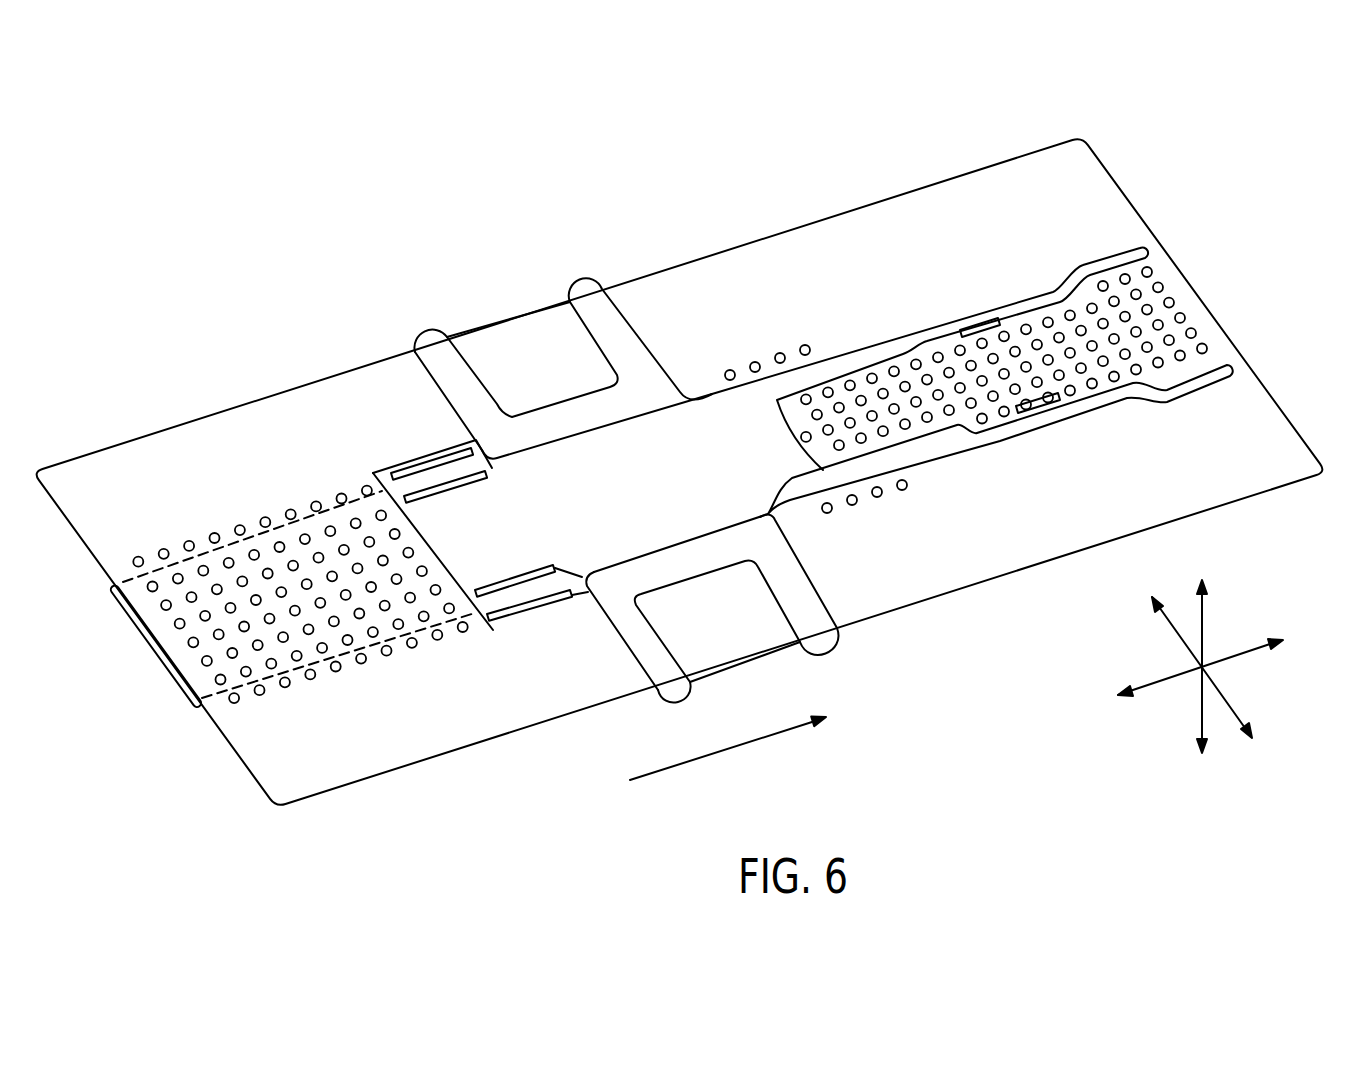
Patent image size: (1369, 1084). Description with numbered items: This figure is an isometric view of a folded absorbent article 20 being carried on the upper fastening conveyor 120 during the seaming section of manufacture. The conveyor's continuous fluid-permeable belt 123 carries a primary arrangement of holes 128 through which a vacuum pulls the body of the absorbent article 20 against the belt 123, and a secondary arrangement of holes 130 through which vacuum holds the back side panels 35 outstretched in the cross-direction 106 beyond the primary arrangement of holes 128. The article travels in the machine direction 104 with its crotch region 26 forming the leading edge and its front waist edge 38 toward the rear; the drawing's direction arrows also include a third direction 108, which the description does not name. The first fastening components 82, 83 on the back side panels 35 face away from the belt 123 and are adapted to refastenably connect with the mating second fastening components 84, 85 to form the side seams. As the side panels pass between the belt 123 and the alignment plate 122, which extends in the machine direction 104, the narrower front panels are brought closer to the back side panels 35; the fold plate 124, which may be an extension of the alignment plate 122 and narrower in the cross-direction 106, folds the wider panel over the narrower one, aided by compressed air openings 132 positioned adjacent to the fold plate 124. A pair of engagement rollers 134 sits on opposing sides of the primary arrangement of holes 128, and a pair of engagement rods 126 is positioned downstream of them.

The upper fastening conveyor 120 is at (110, 347).
The alignment plate 122 is at (432, 347).
The absorbent article 20 is at (637, 483).
The belt 123 is at (1248, 417).
The fold plate 124 is at (937, 445).
The engagement rods 126 is at (1125, 247).
The primary arrangement of holes 128 is at (138, 645).
The secondary arrangement of holes 130 is at (267, 523).
The compressed air openings 132 is at (755, 365).
The engagement rollers 134 is at (980, 322).
The crotch region 26 is at (781, 443).
The back side panels 35 is at (458, 557).
The front waist edge 38 is at (417, 527).
The first fastening component 82 is at (506, 612).
The first fastening component 83 is at (393, 477).
The second fastening component 84 is at (500, 577).
The second fastening component 85 is at (460, 483).
The machine direction 104 is at (1250, 647).
The cross-direction 106 is at (1233, 700).
The axis 108 is at (1200, 717).